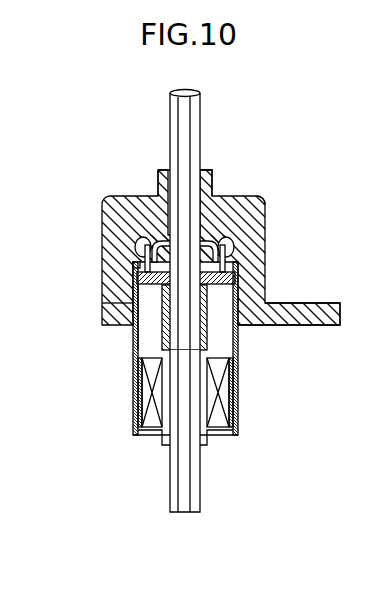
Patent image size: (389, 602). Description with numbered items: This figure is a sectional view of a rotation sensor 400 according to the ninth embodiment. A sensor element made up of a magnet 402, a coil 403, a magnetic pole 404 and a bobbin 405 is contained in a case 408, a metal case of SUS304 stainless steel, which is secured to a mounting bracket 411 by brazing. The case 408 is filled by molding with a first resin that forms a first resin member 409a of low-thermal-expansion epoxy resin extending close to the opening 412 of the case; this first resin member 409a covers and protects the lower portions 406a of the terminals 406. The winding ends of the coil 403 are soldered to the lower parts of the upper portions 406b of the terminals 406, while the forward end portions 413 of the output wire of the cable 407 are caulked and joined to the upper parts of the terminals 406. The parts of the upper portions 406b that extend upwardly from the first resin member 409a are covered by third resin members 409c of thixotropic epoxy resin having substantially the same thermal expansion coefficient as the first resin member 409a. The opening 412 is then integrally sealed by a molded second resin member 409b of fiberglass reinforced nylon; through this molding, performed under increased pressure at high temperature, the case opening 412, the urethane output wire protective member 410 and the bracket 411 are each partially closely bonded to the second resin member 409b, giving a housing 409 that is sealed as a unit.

The rotation sensor 400 is at (90, 184).
The magnet 402 is at (182, 332).
The coil 403 is at (152, 395).
The magnetic pole 404 is at (183, 432).
The bobbin 405 is at (147, 331).
The terminals 406 is at (232, 262).
The lower portions of terminals 406a is at (236, 278).
The upper portions of terminals 406b is at (220, 243).
The cable 407 is at (201, 113).
The case 408 is at (239, 352).
The housing 409 is at (220, 237).
The first resin member 409a is at (233, 385).
The second resin member 409b is at (266, 201).
The third resin members 409c is at (139, 238).
The output wire protective member 410 is at (212, 178).
The mounting bracket 411 is at (336, 318).
The opening 412 is at (131, 266).
The forward end portions of output wire 413 is at (132, 242).